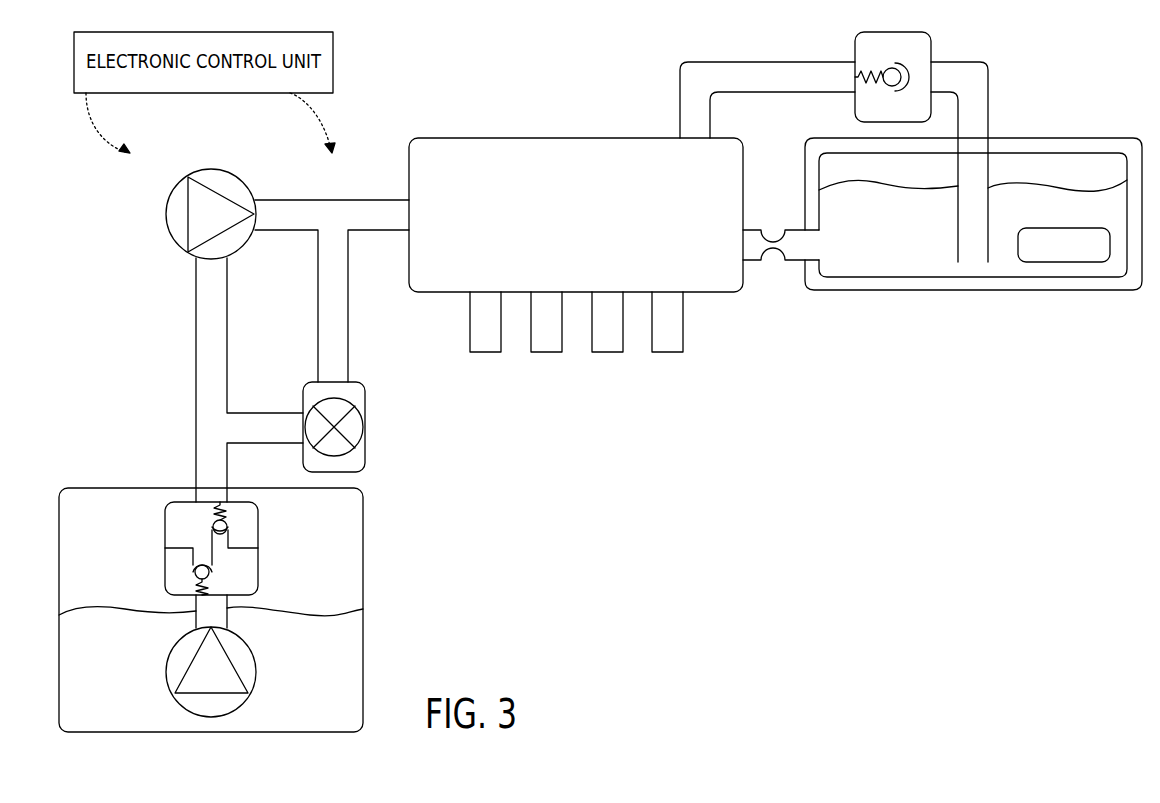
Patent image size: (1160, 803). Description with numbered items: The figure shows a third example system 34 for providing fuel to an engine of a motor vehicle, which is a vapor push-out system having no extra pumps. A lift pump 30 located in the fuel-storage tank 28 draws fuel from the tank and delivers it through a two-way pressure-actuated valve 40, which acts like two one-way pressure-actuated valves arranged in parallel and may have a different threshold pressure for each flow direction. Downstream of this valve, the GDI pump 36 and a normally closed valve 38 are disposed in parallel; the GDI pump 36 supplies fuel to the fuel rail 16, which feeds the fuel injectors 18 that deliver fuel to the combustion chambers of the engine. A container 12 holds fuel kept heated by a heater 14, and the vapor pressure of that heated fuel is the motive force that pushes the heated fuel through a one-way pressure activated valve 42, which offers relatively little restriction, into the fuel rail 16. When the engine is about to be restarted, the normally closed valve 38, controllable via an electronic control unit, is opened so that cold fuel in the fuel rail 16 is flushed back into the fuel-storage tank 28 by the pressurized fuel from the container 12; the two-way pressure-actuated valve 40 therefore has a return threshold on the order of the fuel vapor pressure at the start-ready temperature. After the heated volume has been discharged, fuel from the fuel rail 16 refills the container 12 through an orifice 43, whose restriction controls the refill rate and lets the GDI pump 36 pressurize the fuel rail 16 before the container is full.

The container 12 is at (958, 290).
The heater 14 is at (1075, 253).
The fuel rail 16 is at (589, 226).
The fuel injectors 18 is at (695, 319).
The fuel-storage tank 28 is at (90, 488).
The lift pump 30 is at (258, 672).
The system 34 is at (665, 622).
The GDI pump 36 is at (166, 214).
The normally closed valve 38 is at (366, 427).
The two-way pressure-actuated valve 40 is at (260, 549).
The one-way pressure activated valve 42 is at (892, 31).
The orifice 43 is at (774, 271).